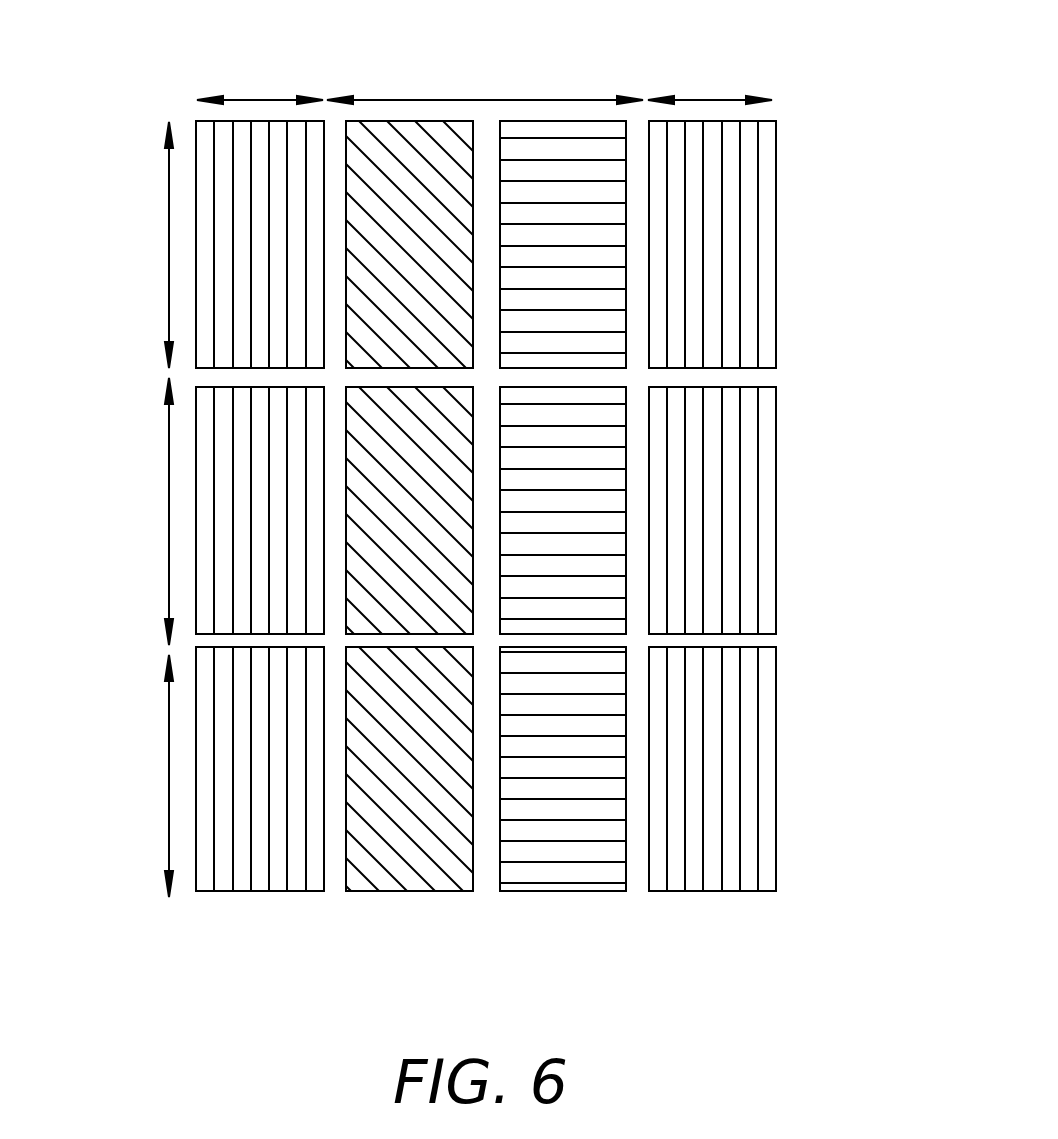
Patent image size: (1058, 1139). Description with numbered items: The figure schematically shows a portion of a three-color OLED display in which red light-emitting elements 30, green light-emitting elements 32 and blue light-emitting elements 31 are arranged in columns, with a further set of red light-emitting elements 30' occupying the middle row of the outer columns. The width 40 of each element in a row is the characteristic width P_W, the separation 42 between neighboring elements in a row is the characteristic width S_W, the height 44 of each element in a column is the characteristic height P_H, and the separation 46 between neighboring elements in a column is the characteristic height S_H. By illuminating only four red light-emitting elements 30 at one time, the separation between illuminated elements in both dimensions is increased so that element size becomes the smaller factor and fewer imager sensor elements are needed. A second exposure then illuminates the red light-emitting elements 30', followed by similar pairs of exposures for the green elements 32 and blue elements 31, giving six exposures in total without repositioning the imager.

The red light-emitting element 30 is at (500, 530).
The red light-emitting element 30' is at (491, 510).
The blue light-emitting element 31 is at (571, 891).
The green light-emitting element 32 is at (415, 891).
The width 40 is at (248, 100).
The separation 42 is at (462, 100).
The height 44 is at (168, 238).
The separation 46 is at (168, 503).